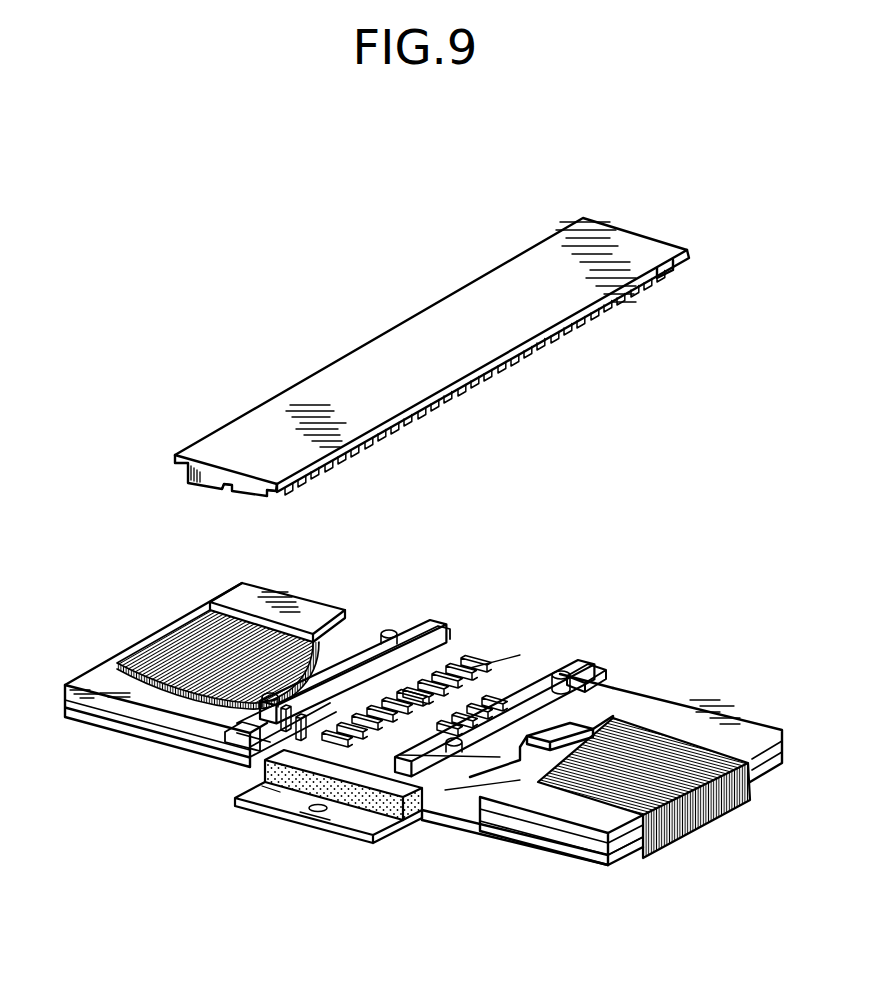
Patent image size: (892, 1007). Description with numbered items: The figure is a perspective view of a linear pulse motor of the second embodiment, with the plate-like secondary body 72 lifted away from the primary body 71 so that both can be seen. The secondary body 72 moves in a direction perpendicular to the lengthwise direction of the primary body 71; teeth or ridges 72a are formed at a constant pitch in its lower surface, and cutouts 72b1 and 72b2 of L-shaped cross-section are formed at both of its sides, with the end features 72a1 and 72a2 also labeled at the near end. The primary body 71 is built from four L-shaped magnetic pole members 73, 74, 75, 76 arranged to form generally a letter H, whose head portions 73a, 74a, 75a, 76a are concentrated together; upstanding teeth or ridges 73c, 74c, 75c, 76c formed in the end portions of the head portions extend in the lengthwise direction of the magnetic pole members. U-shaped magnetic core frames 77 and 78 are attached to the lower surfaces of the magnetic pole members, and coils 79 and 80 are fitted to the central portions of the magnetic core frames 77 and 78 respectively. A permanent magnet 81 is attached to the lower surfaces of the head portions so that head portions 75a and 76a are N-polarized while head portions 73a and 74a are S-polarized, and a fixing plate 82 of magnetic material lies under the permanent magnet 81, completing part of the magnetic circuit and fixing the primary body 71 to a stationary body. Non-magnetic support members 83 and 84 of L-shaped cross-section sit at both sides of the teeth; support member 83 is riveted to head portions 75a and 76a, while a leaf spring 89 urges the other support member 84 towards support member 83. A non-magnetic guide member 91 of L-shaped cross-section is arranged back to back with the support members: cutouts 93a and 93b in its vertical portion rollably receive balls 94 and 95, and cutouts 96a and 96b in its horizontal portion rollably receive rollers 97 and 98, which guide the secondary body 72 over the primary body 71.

The primary body 71 is at (160, 370).
The secondary body 72 is at (372, 378).
The teeth or ridges 72a is at (486, 383).
The notch 72a1 is at (242, 490).
The end tab face 72a2 is at (196, 485).
The cutout 72b1 is at (272, 498).
The cutout 72b2 is at (186, 469).
The magnetic pole member 73 is at (697, 712).
The head portion 73a is at (624, 700).
The upstanding teeth or ridges 73c is at (533, 660).
The magnetic pole member 74 is at (530, 790).
The head portion 74a is at (470, 790).
The upstanding teeth or ridges 74c is at (410, 800).
The magnetic pole member 75 is at (296, 612).
The head portion 75a is at (362, 628).
The upstanding teeth or ridges 75c is at (499, 665).
The magnetic pole member 76 is at (115, 685).
The head portion 76a is at (205, 747).
The upstanding teeth or ridges 76c is at (318, 820).
The magnetic core frame 77 is at (633, 860).
The magnetic core frame 78 is at (138, 740).
The coil 79 is at (688, 858).
The coil 80 is at (200, 640).
The permanent magnet 81 is at (355, 800).
The fixing plate 82 is at (335, 830).
The support member 83 is at (357, 640).
The support member 84 is at (588, 690).
The leaf spring 89 is at (585, 660).
The guide member 91 is at (300, 812).
The cutout 93a is at (412, 640).
The cutout 93b is at (262, 715).
The ball 94 is at (430, 630).
The ball 95 is at (252, 752).
The cutout 96a is at (487, 650).
The cutout 96b is at (272, 790).
The roller 97 is at (480, 632).
The roller 98 is at (255, 775).